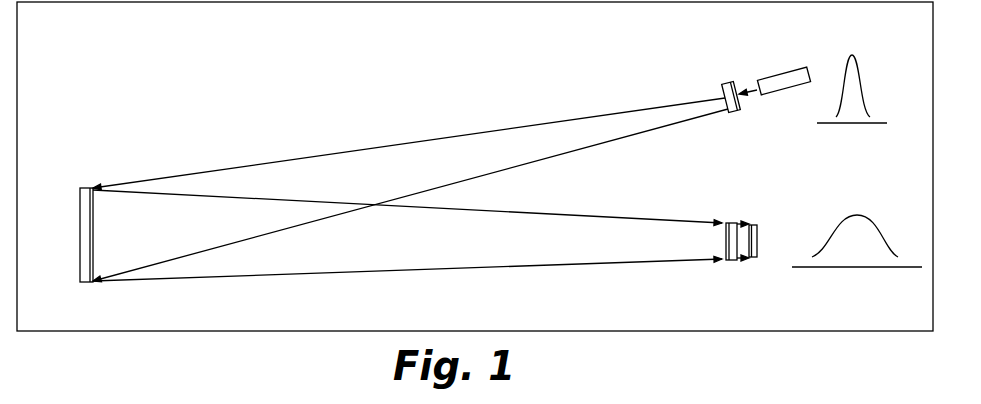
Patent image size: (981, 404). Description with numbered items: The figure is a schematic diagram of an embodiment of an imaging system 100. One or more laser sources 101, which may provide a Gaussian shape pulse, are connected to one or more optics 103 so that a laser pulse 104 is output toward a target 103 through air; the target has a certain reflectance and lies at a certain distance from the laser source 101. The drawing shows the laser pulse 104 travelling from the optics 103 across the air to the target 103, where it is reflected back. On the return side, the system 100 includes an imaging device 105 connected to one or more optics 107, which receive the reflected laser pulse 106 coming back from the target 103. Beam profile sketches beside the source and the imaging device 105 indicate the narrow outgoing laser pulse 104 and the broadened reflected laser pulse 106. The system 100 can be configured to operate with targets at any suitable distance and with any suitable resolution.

The system 100 is at (133, 52).
The laser source 101 is at (782, 80).
The optics / target 103 is at (724, 83).
The laser pulse 104 is at (345, 170).
The imaging device 105 is at (755, 238).
The reflected laser pulse 106 is at (370, 260).
The optics 107 is at (731, 223).